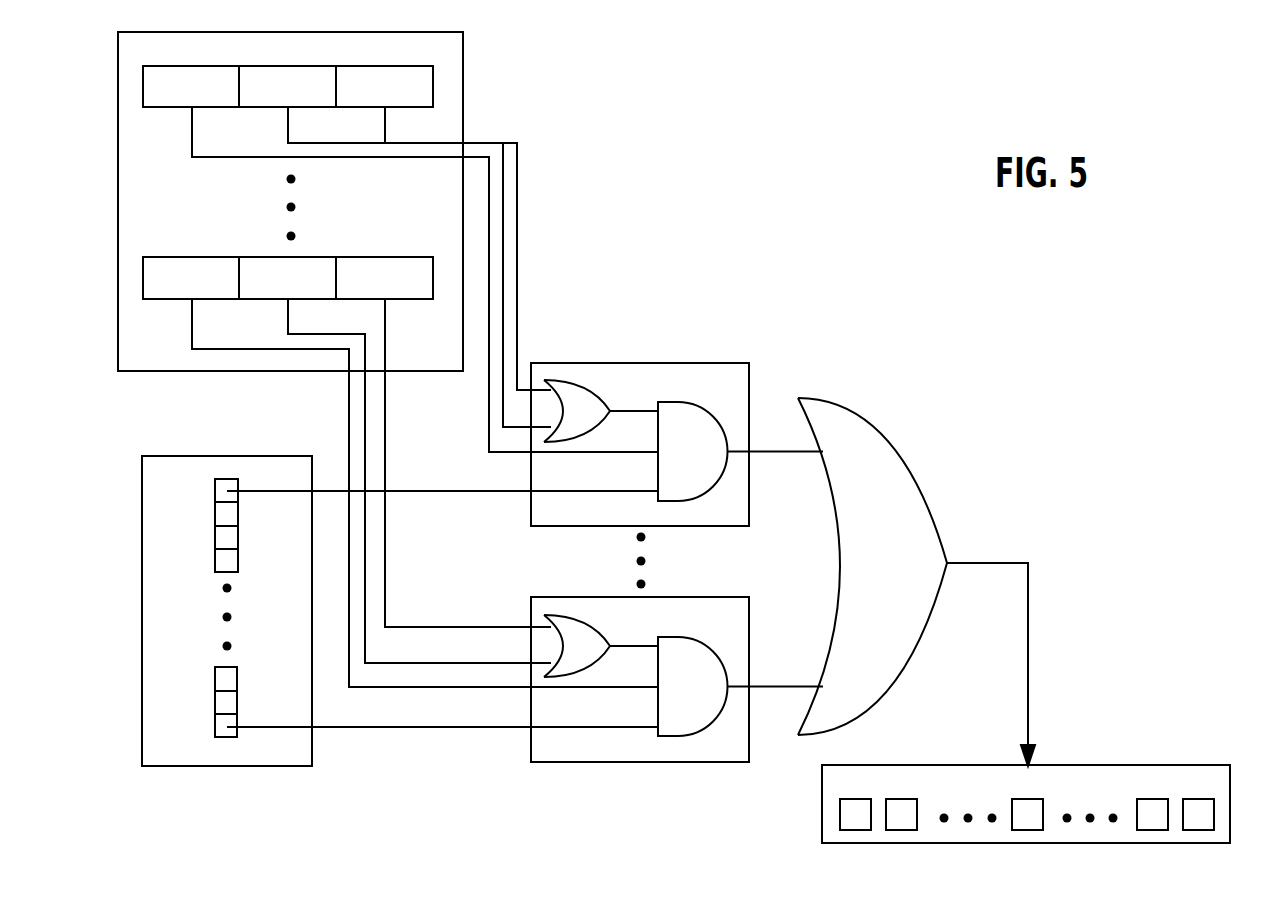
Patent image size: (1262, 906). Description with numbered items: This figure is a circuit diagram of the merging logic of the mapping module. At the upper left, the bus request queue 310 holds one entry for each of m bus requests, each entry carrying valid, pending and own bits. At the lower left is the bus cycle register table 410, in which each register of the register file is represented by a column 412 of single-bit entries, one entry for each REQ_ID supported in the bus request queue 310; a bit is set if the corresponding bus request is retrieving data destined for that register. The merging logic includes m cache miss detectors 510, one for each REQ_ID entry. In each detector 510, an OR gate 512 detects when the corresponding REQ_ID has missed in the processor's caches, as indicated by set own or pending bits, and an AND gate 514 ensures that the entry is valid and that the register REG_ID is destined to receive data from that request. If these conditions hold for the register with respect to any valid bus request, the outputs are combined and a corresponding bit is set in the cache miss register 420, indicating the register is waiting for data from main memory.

The bus request queue 310 is at (463, 66).
The bus cycle register table 410 is at (387, 669).
The column 412 is at (226, 748).
The cache miss register 420 is at (822, 789).
The cache miss detector 510 is at (677, 518).
The OR gate 512 is at (573, 388).
The AND gate 514 is at (702, 440).